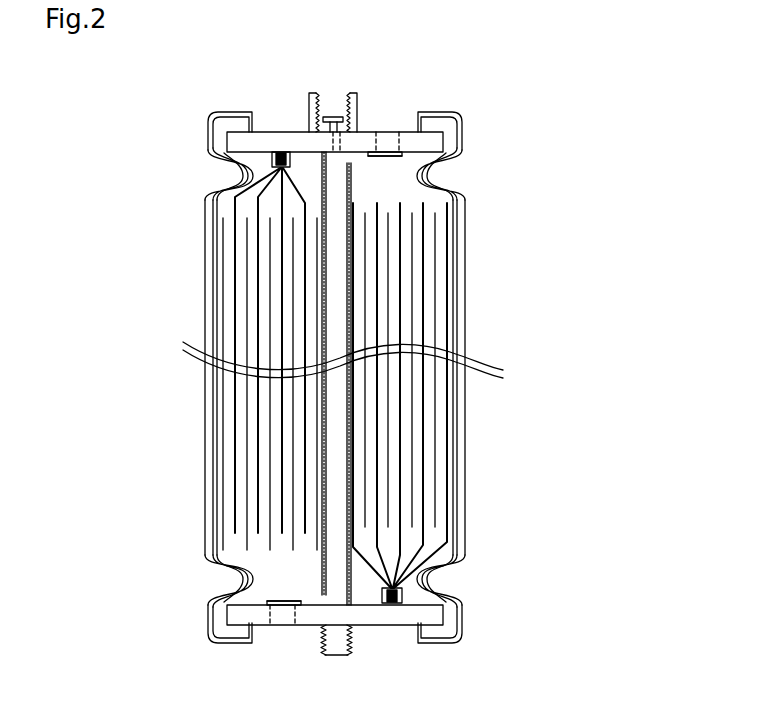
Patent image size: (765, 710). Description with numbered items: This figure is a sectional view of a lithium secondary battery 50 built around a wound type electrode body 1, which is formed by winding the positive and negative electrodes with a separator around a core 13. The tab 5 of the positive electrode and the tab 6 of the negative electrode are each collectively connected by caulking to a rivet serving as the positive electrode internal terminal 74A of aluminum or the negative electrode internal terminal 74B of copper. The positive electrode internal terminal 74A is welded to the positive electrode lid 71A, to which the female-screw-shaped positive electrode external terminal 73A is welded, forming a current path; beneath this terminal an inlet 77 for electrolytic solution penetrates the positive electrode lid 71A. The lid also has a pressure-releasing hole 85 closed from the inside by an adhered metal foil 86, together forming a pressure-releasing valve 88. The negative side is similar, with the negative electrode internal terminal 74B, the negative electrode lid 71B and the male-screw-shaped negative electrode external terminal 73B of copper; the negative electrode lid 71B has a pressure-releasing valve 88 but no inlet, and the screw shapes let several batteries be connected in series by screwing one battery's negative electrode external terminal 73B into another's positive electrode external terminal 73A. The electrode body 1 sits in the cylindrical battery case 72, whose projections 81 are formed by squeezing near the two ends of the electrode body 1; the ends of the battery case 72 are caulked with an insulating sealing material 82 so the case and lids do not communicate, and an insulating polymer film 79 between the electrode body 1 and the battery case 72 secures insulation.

The battery 50 is at (475, 68).
The wound type electrode body 1 is at (432, 287).
The tab 5 is at (240, 198).
The tab 6 is at (432, 553).
The core 13 is at (347, 323).
The positive electrode lid 71A is at (236, 140).
The negative electrode lid 71B is at (430, 617).
The battery case 72 is at (207, 303).
The positive electrode external terminal 73A is at (309, 120).
The negative electrode external terminal 73B is at (345, 640).
The positive electrode internal terminal 74A is at (272, 159).
The negative electrode internal terminal 74B is at (402, 593).
The inlet for electrolytic solution 77 is at (323, 140).
The insulating polymer film 79 is at (465, 188).
The projections 81 is at (432, 173).
The insulating sealing material 82 is at (447, 142).
The pressure-releasing hole 85 is at (386, 152).
The metal foil 86 is at (387, 157).
The pressure-releasing valve 88 is at (378, 124).